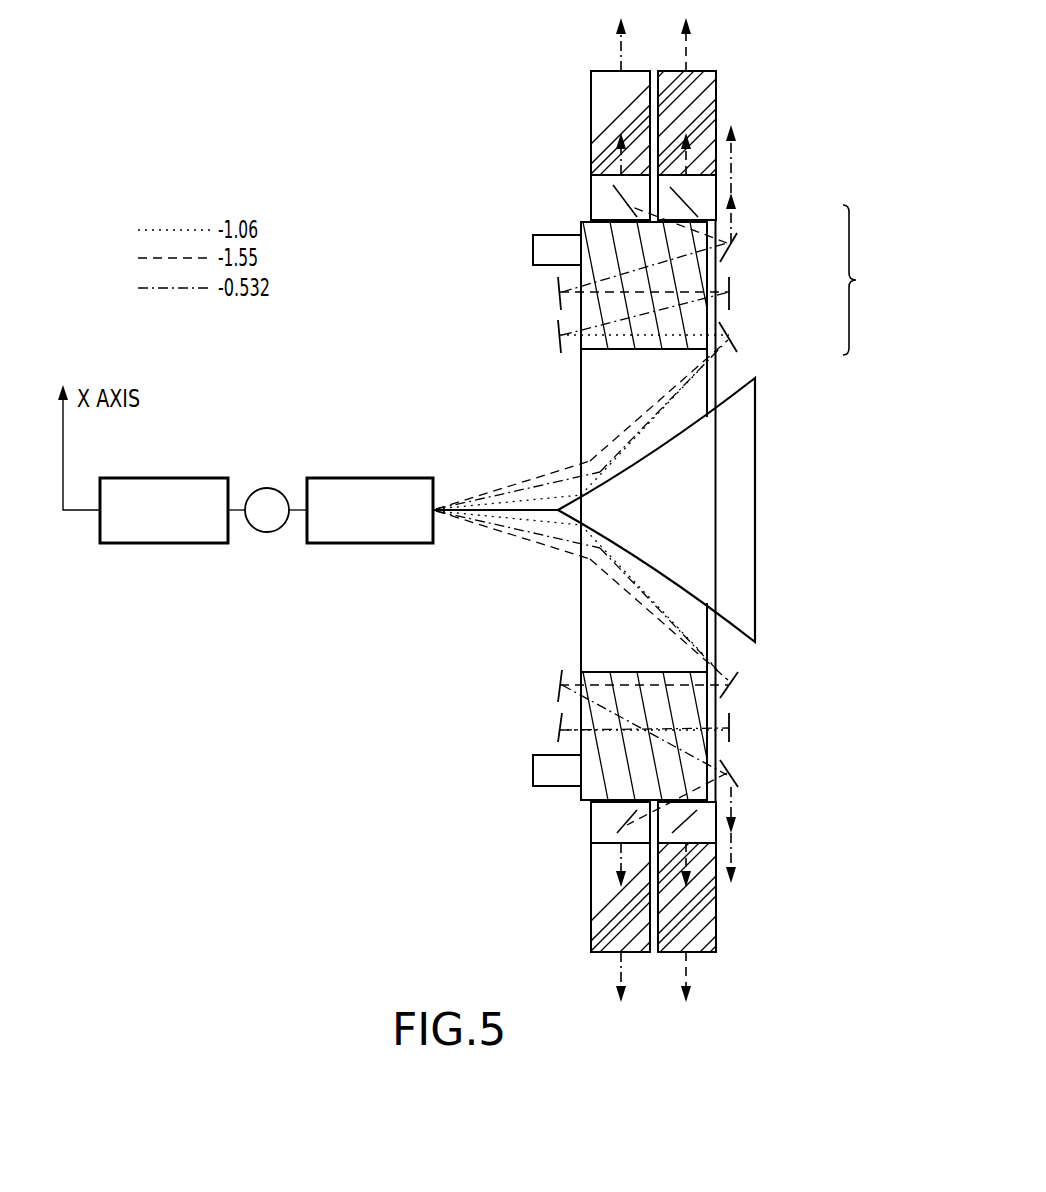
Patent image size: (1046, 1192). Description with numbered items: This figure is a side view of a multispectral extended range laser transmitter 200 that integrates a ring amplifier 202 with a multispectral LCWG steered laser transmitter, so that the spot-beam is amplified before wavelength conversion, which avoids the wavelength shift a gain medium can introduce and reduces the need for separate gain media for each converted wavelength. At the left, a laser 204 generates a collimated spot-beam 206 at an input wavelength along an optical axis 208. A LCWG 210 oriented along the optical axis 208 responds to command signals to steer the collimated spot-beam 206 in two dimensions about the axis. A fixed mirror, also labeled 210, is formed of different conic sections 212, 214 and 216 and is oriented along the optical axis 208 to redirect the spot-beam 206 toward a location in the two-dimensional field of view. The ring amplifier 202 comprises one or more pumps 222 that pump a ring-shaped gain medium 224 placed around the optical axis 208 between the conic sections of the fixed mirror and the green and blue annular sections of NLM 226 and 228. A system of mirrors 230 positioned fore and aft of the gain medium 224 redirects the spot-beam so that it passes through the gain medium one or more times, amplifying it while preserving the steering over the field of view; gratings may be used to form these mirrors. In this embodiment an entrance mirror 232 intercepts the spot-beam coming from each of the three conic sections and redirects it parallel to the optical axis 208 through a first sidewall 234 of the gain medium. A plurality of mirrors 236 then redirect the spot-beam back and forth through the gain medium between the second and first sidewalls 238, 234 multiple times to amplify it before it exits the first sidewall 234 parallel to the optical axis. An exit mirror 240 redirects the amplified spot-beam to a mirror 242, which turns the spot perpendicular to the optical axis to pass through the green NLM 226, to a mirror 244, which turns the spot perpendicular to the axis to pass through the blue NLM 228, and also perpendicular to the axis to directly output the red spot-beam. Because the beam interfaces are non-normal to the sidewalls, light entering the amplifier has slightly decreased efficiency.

The multispectral extended range laser transmitter 200 is at (213, 139).
The ring amplifier 202 is at (450, 206).
The laser 204 is at (155, 544).
The collimated spot-beam 206 is at (267, 533).
The optical axis 208 is at (498, 518).
The LCWG 210 is at (370, 544).
The conic section 212 is at (567, 505).
The conic section 214 is at (657, 455).
The conic section 216 is at (727, 402).
The pump 222 is at (540, 250).
The ring-shaped gain medium 224 is at (583, 228).
The green NLM 226 is at (596, 98).
The blue NLM 228 is at (703, 97).
The system of mirrors 230 is at (809, 496).
The entrance mirror 232 is at (733, 337).
The first sidewall 234 is at (730, 290).
The plurality of mirrors 236 is at (556, 335).
The second sidewall 238 is at (556, 292).
The exit mirror 240 is at (733, 243).
The mirror 242 is at (595, 190).
The mirror 244 is at (703, 190).